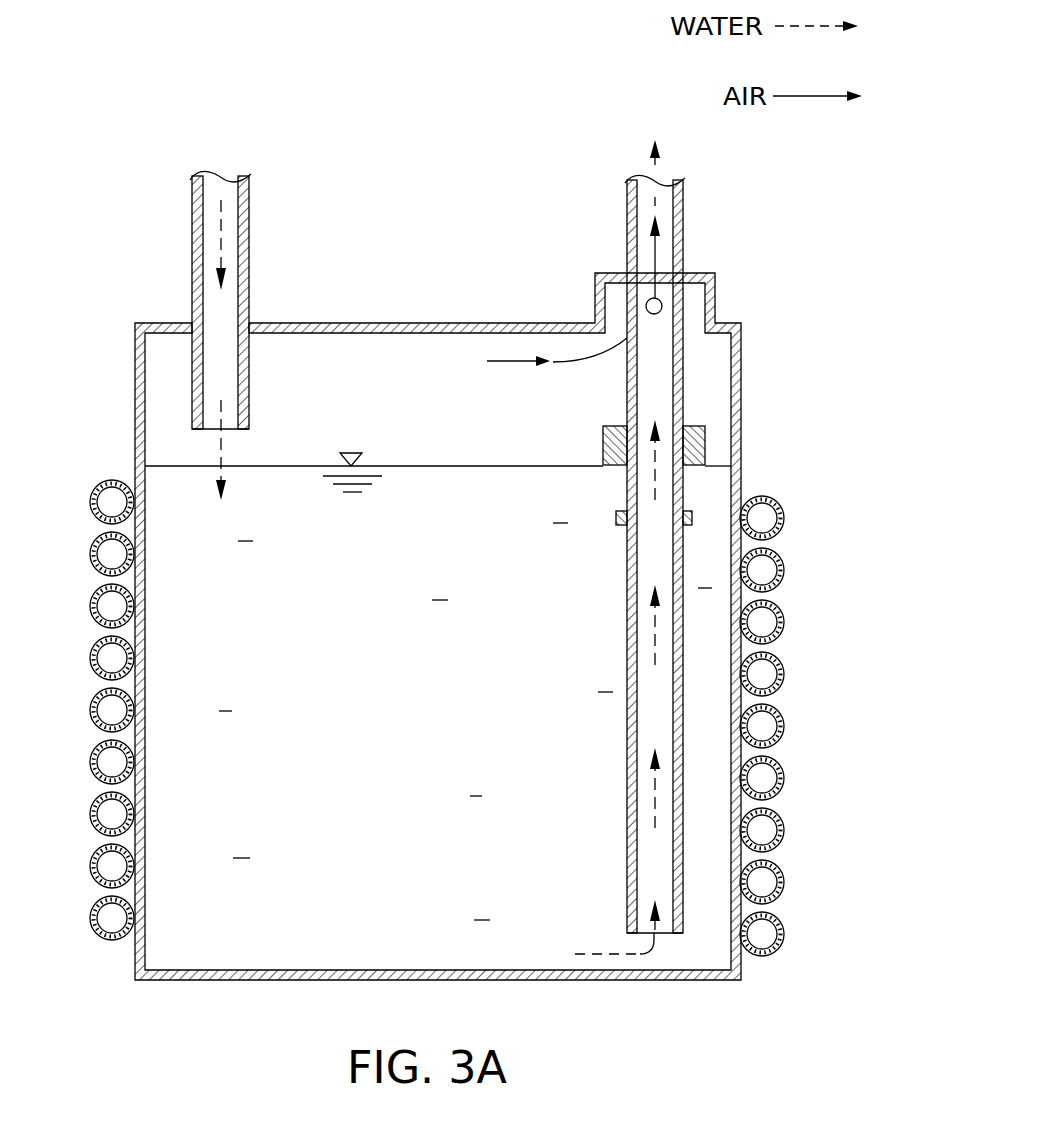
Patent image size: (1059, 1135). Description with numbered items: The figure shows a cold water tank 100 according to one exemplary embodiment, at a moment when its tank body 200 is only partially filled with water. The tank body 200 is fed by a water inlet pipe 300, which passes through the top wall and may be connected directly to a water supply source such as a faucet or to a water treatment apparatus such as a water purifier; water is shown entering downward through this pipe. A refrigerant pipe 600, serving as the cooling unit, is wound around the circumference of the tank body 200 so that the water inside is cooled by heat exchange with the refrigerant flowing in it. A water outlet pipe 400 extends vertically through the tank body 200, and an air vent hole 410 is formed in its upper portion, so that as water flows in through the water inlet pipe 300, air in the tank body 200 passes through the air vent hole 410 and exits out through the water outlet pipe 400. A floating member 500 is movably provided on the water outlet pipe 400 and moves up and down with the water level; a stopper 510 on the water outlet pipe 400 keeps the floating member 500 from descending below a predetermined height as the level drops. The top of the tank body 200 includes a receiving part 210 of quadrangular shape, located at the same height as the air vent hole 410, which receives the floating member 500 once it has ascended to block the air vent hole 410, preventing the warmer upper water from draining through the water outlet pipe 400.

The cold water tank 100 is at (84, 210).
The tank body 200 is at (126, 377).
The receiving part 210 is at (596, 300).
The water inlet pipe 300 is at (192, 270).
The water outlet pipe 400 is at (683, 242).
The air vent hole 410 is at (662, 306).
The floating member 500 is at (705, 440).
The stopper 510 is at (692, 517).
The refrigerant pipe 600 is at (783, 577).